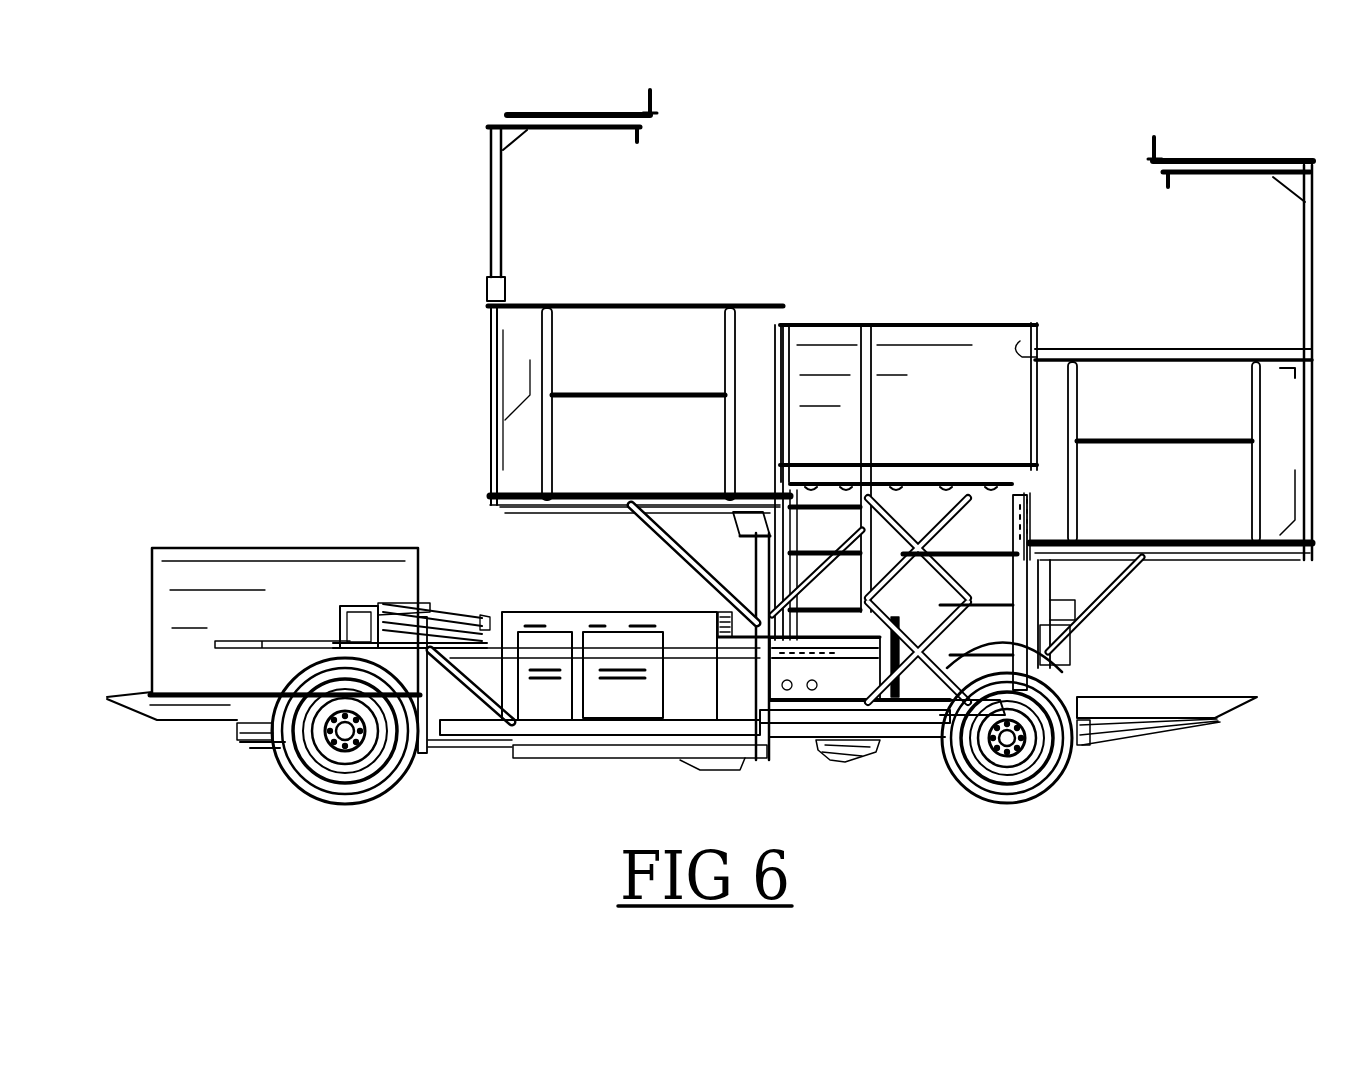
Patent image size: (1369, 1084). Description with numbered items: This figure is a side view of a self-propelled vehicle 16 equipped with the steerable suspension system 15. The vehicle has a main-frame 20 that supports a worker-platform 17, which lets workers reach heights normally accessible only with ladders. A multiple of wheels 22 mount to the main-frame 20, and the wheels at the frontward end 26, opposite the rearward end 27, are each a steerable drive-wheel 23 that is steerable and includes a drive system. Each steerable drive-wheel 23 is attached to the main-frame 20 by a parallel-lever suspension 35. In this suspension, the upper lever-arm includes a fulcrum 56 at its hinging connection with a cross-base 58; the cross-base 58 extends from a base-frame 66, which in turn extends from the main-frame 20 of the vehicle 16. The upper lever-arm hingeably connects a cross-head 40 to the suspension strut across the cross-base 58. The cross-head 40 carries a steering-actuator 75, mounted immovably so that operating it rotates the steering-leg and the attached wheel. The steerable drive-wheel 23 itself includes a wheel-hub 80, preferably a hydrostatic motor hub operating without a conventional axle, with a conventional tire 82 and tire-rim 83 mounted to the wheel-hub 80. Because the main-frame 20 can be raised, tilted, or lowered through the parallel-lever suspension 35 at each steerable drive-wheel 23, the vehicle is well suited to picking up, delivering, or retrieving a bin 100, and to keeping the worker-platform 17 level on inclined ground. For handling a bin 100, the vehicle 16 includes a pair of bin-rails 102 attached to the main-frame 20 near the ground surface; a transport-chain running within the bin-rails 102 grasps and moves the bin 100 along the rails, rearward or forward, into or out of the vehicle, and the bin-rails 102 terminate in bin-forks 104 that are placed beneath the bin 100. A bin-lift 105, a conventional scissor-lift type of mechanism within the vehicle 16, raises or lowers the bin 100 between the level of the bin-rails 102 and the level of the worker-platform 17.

The steerable suspension system 15 is at (458, 822).
The self-propelled vehicle 16 is at (285, 368).
The worker-platform 17 is at (655, 492).
The main-frame 20 is at (662, 740).
The wheels 22 is at (962, 770).
The steerable drive-wheel 23 is at (260, 748).
The frontward end 26 is at (192, 510).
The rearward end 27 is at (1262, 670).
The parallel-lever suspension 35 is at (452, 572).
The cross-head 40 is at (375, 617).
The fulcrum 56 is at (440, 615).
The cross-base 58 is at (462, 627).
The base-frame 66 is at (462, 740).
The steering-actuator 75 is at (345, 625).
The wheel-hub 80 is at (338, 732).
The tire 82 is at (369, 790).
The tire-rim 83 is at (325, 757).
The bin 100 is at (158, 580).
The bin-rails 102 is at (255, 733).
The bin-forks 104 is at (112, 690).
The bin-lift 105 is at (879, 573).